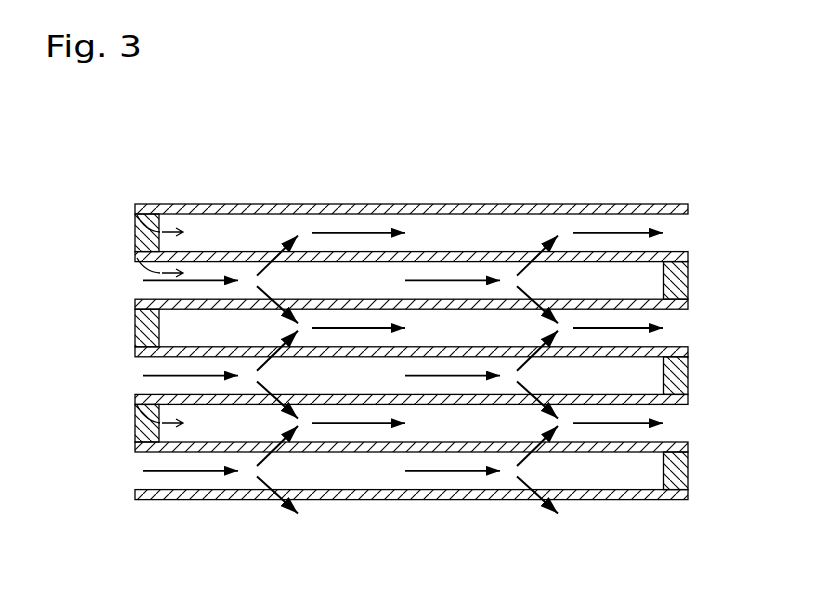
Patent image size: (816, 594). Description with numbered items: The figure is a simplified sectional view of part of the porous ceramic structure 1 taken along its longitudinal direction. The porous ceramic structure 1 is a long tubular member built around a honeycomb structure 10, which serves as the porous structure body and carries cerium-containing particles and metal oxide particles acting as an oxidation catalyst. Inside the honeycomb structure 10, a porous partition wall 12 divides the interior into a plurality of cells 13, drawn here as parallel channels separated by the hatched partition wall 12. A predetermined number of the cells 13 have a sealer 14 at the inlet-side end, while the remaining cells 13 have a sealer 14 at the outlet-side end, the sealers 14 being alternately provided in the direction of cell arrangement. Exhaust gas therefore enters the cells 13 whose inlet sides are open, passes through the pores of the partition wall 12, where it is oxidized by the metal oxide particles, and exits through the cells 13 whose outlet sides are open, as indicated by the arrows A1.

The porous ceramic structure 1 is at (272, 143).
The honeycomb structure 10 is at (618, 190).
The partition wall 12 is at (470, 208).
The cells 13 is at (137, 215).
The sealer 14 is at (143, 331).
The arrows A1 is at (278, 250).